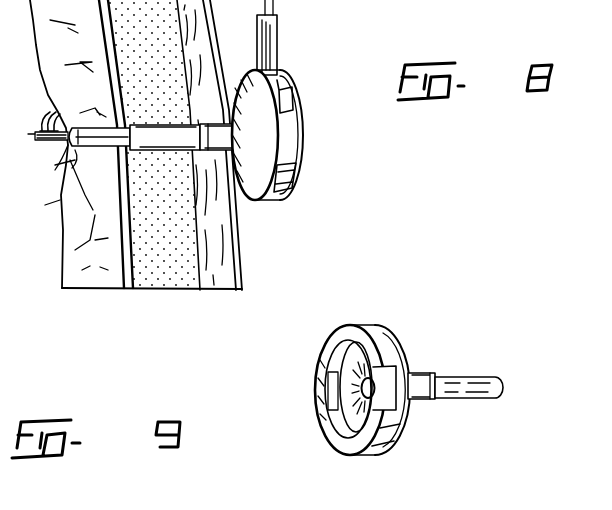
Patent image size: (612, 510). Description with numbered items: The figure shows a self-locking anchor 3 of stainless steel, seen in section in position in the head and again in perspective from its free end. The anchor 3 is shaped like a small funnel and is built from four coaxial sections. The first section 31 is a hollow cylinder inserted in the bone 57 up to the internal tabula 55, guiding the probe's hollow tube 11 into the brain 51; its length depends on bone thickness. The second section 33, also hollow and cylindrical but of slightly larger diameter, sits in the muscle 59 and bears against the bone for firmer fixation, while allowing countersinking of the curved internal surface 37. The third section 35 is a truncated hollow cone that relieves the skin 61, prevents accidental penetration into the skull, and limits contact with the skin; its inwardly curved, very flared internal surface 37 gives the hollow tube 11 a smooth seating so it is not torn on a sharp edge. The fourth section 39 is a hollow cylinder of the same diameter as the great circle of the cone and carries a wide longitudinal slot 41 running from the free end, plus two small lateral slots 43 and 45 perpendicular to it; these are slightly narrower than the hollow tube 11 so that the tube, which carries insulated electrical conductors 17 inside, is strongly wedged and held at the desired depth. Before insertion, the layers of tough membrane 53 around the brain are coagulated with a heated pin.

In FIG. 8, the anchor 3 is at (293, 115).
In FIG. 9, the anchor 3 is at (390, 360).
In FIG. 8, the hollow tube 11 is at (82, 155).
In FIG. 8, the insulated electrical conductors 17 is at (45, 112).
In FIG. 8, the first section 31 is at (165, 152).
In FIG. 9, the first section 31 is at (480, 388).
In FIG. 8, the second section 33 is at (226, 152).
In FIG. 9, the second section 33 is at (424, 398).
In FIG. 8, the third section 35 is at (262, 140).
In FIG. 9, the internal surface 37 is at (350, 377).
In FIG. 8, the fourth section 39 is at (300, 153).
In FIG. 9, the fourth section 39 is at (346, 332).
In FIG. 9, the longitudinal slot 41 is at (384, 387).
In FIG. 8, the lateral slot 43 is at (284, 196).
In FIG. 9, the lateral slot 43 is at (383, 331).
In FIG. 8, the lateral slot 45 is at (294, 107).
In FIG. 9, the lateral slot 45 is at (388, 444).
In FIG. 8, the brain 51 is at (77, 278).
In FIG. 8, the tough membrane 53 is at (128, 292).
In FIG. 8, the internal tabula 55 is at (133, 290).
In FIG. 8, the bone 57 is at (172, 290).
In FIG. 8, the muscle 59 is at (218, 287).
In FIG. 8, the skin 61 is at (238, 253).